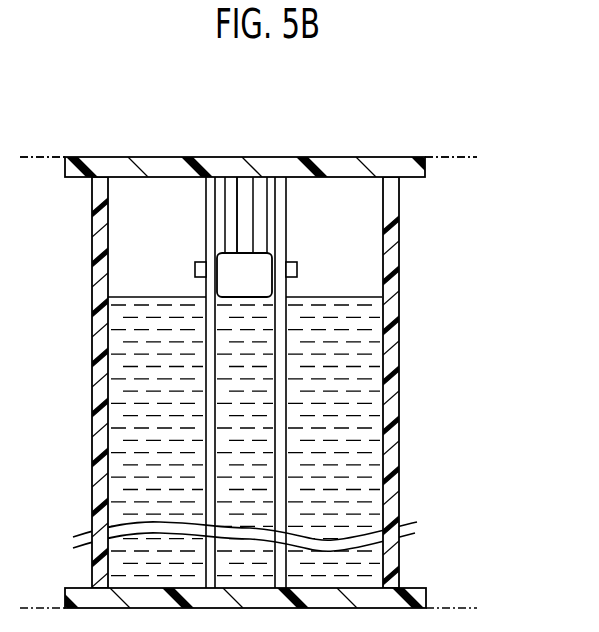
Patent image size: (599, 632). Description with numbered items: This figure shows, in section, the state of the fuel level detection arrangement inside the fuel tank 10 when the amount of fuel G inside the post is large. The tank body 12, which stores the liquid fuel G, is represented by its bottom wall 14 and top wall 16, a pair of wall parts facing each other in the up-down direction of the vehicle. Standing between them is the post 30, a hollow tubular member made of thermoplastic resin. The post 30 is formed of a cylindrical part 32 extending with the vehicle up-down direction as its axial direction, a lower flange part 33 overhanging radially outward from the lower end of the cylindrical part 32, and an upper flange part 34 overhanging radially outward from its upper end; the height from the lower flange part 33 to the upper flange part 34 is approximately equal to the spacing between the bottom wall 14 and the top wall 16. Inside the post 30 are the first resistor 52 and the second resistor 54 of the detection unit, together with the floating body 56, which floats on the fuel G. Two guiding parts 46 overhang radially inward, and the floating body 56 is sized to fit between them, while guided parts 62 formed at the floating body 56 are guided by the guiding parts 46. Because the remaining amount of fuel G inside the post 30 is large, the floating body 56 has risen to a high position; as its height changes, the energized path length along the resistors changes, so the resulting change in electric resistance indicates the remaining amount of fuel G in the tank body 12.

The fuel tank 10 is at (352, 135).
The tank body 12 is at (443, 157).
The bottom wall 14 is at (472, 608).
The top wall 16 is at (463, 160).
The post 30 is at (408, 335).
The cylindrical part 32 is at (400, 278).
The lower flange part 33 is at (412, 588).
The upper flange part 34 is at (428, 175).
The guiding parts 46 is at (206, 198).
The first resistor 52 is at (263, 215).
The second resistor 54 is at (236, 228).
The floating body 56 is at (252, 268).
The guided parts 62 is at (195, 267).
The fuel G is at (370, 290).